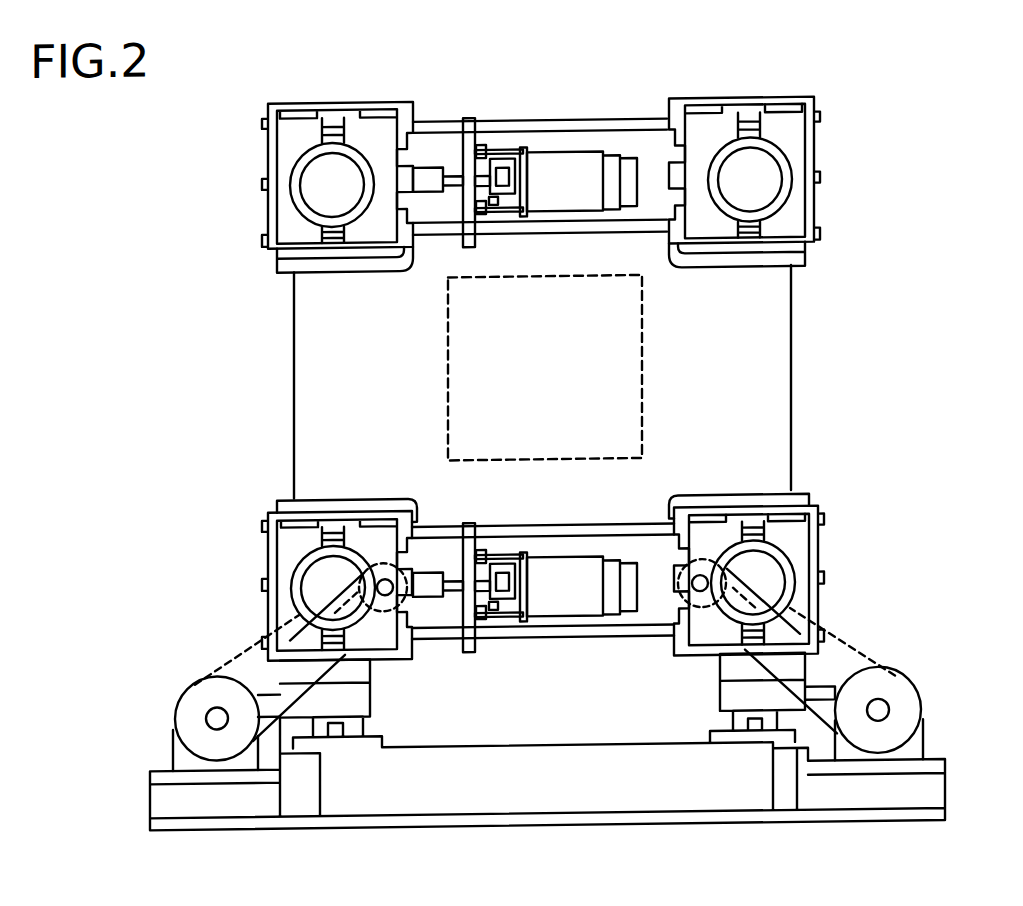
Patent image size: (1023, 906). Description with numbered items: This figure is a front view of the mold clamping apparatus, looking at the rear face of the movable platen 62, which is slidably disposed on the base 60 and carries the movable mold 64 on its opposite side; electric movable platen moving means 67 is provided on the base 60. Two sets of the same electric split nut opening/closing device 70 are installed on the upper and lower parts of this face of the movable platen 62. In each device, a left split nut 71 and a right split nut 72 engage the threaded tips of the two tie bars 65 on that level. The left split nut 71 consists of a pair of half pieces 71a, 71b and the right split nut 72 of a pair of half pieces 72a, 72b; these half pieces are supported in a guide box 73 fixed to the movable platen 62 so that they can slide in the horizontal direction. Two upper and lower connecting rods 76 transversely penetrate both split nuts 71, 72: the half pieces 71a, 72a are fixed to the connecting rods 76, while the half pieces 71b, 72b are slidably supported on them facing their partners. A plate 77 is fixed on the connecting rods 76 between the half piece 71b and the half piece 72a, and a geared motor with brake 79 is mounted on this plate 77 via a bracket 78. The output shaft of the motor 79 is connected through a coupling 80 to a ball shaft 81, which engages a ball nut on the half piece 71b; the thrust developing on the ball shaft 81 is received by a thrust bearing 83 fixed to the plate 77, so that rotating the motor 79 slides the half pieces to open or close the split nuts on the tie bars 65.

The base 60 is at (553, 812).
The movable platen 62 is at (791, 342).
The movable mold 64 is at (642, 389).
The tie bar 65 is at (323, 177).
The electric movable platen moving means 67 is at (920, 674).
The electric split nut opening/closing device 70 is at (738, 97).
The left split nut 71 is at (146, 146).
The half piece of left split nut 71a is at (290, 149).
The half piece of left split nut 71b is at (333, 228).
The right split nut 72 is at (950, 143).
The half piece of right split nut 72a is at (720, 138).
The half piece of right split nut 72b is at (783, 226).
The guide box 73 is at (268, 253).
The connecting rod 76 is at (633, 122).
The plate 77 is at (472, 122).
The bracket 78 is at (524, 150).
The geared motor with brake 79 is at (565, 170).
The coupling 80 is at (505, 160).
The ball shaft 81 is at (457, 172).
The thrust bearing 83 is at (498, 160).